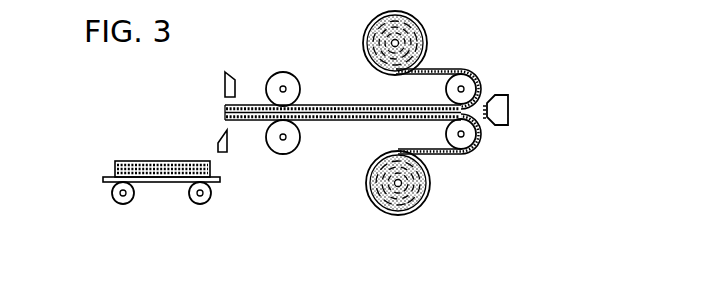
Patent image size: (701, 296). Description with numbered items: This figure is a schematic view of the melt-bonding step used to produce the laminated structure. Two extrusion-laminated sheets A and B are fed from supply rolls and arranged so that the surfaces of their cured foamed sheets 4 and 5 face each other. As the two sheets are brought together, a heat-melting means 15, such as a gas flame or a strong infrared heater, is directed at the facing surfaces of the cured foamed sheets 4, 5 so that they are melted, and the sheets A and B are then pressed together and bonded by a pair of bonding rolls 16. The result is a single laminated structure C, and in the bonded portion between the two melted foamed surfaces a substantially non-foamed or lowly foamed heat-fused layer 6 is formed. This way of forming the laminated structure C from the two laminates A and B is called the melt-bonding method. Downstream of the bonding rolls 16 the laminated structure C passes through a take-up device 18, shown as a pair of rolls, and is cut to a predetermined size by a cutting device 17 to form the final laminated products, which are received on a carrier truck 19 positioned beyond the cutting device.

The cured foamed sheet 4 is at (482, 78).
The cured foamed sheet 5 is at (480, 140).
The heat-fused layer 6 is at (350, 105).
The heat-melting means 15 is at (508, 110).
The bonding rolls 16 is at (448, 89).
The cutting device 17 is at (222, 82).
The take-up device 18 is at (296, 130).
The carrier truck 19 is at (163, 184).
The extrusion-laminated sheet A is at (448, 72).
The extrusion-laminated sheet B is at (447, 157).
The laminated structure C is at (333, 126).